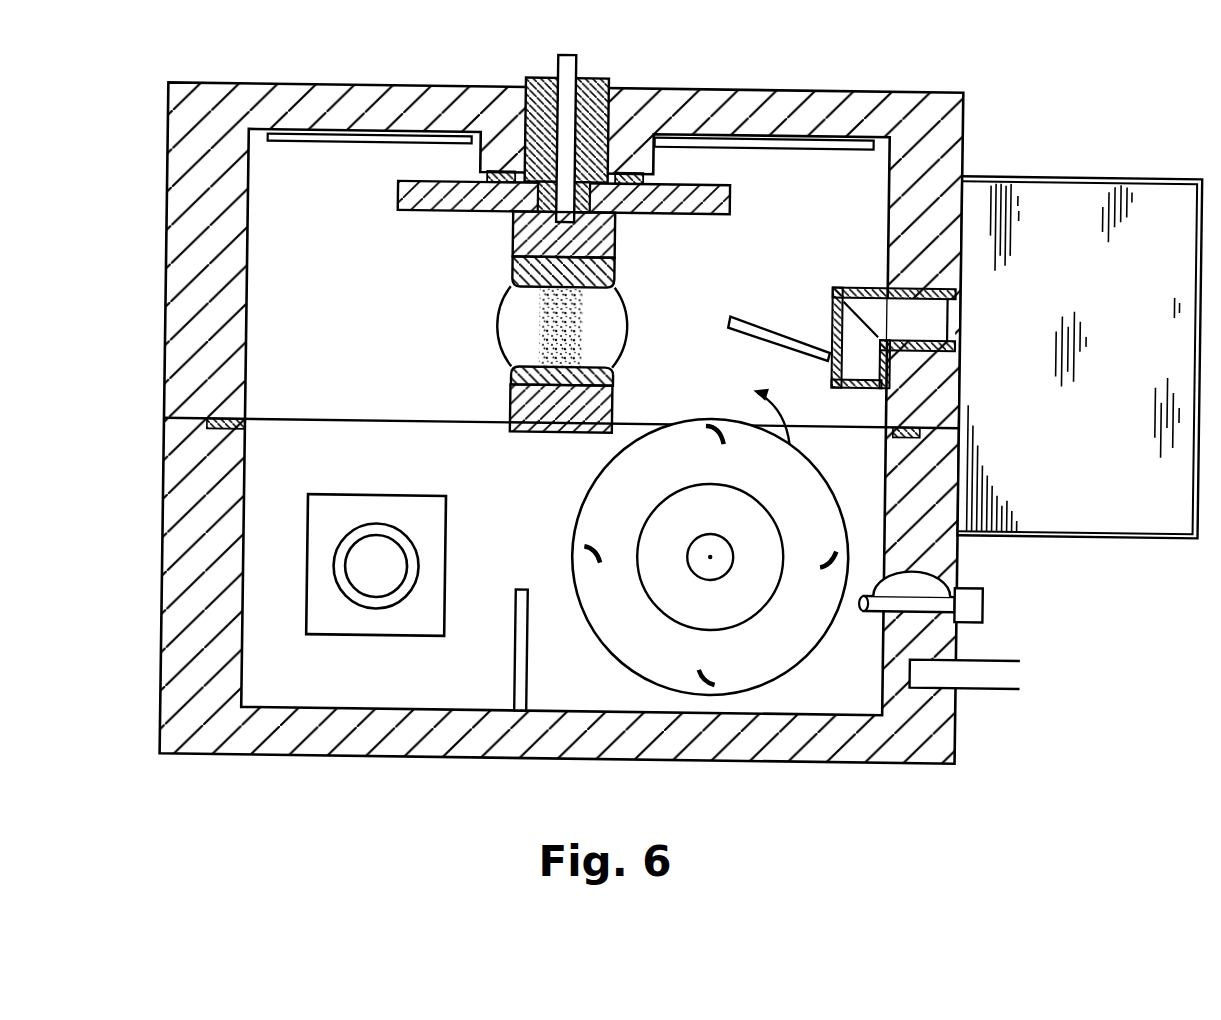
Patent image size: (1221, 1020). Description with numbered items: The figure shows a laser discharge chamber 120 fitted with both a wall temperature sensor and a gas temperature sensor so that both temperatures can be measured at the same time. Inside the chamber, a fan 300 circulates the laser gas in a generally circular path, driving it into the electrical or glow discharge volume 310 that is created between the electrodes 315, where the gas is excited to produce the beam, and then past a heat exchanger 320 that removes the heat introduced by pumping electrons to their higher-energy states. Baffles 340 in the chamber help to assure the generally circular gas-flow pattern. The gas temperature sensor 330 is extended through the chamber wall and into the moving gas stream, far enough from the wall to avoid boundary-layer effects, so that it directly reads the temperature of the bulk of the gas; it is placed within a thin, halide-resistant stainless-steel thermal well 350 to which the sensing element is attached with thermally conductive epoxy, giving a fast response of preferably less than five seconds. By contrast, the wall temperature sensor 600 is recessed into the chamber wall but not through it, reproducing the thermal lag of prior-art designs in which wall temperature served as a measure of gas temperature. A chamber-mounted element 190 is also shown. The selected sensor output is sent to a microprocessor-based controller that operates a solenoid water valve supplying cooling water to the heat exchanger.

The discharge chamber 120 is at (807, 86).
The collection chamber 190 is at (1084, 170).
The fan 300 is at (757, 648).
The glow discharge volume 310 is at (497, 323).
The electrodes 315 is at (511, 273).
The heat exchanger 320 is at (371, 497).
The temperature sensor 330 is at (984, 602).
The baffles 340 is at (760, 324).
The thermal well 350 is at (952, 580).
The temperature sensor 600 is at (1013, 671).